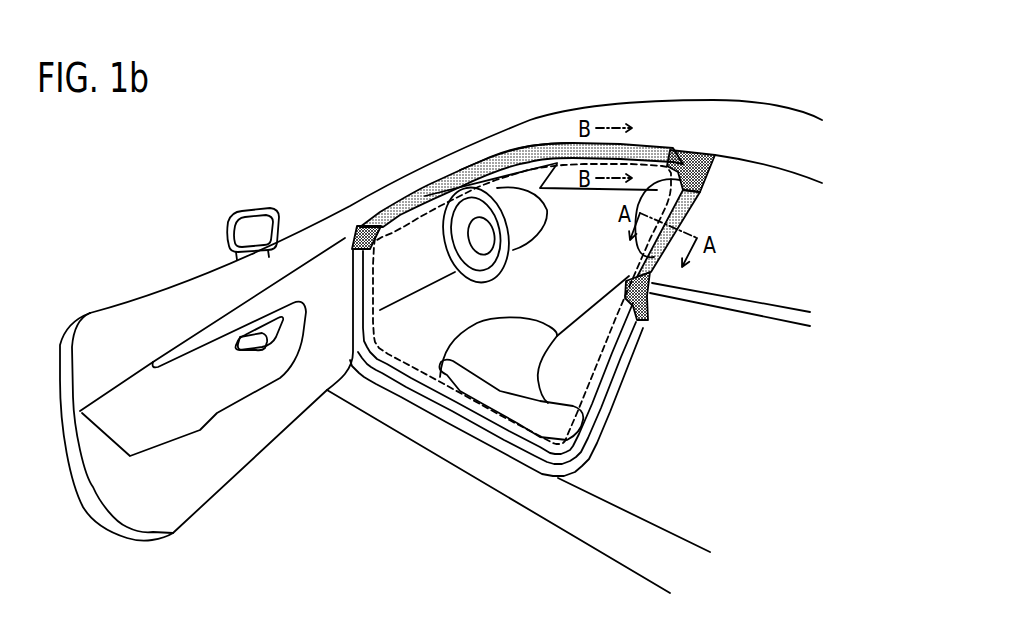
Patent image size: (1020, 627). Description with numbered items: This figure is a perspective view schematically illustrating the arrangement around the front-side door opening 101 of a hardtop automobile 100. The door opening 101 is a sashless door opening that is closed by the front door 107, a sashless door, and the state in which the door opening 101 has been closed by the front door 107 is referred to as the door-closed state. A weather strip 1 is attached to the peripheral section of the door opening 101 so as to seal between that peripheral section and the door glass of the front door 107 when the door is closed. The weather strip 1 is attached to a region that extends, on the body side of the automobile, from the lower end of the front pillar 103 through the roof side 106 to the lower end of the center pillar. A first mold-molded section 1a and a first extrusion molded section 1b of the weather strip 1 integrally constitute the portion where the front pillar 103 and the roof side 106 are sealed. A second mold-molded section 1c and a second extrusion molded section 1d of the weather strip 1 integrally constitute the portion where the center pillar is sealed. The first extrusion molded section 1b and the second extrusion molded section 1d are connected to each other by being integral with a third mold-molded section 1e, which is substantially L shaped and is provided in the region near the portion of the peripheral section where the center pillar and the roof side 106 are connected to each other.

The weather strip 1 is at (551, 143).
The first mold-molded section 1a is at (362, 226).
The first extrusion molded section 1b is at (499, 153).
The second mold-molded section 1c is at (650, 316).
The second extrusion molded section 1d is at (696, 205).
The third mold-molded section 1e is at (698, 150).
The hardtop 100 is at (771, 76).
The door opening 101 is at (425, 338).
The front pillar 103 is at (418, 168).
The roof side 106 is at (642, 117).
The front door 107 is at (267, 432).